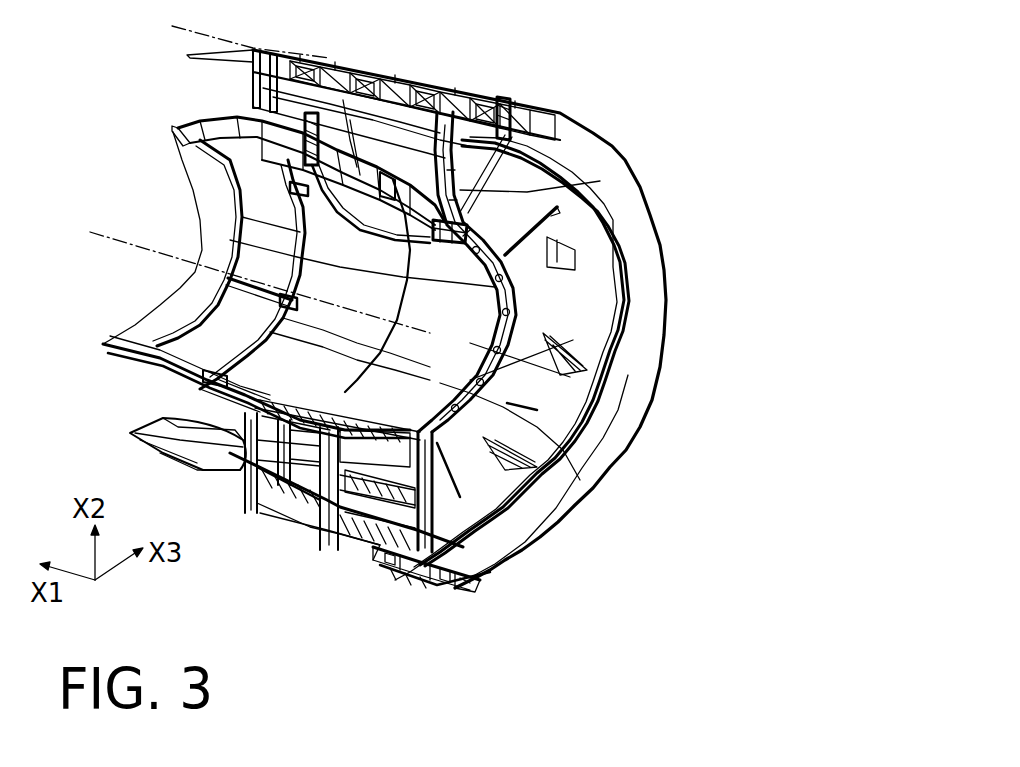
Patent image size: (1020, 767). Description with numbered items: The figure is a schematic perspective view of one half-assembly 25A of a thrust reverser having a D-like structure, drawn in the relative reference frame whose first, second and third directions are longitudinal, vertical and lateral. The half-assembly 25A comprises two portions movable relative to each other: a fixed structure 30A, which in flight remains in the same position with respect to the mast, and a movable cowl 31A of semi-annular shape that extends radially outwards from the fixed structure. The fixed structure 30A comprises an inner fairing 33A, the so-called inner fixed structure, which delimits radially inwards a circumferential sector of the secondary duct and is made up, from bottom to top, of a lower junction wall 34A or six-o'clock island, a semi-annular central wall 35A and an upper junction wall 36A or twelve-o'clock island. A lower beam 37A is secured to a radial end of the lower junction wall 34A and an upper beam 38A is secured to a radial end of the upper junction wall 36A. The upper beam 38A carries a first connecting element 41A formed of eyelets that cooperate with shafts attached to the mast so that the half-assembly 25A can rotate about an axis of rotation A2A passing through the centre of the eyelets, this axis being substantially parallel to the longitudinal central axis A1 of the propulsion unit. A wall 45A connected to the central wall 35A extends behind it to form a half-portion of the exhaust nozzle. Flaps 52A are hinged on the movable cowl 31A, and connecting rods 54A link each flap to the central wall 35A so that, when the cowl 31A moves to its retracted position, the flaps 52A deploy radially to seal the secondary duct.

The half-assembly 25A is at (556, 73).
The movable cowl 31A is at (608, 145).
The first connecting element 41A is at (433, 97).
The wall 45A is at (190, 122).
The connecting rods 54A is at (403, 252).
The flaps 52A is at (280, 300).
The axis of rotation A2A is at (176, 25).
The longitudinal central axis A1 is at (90, 232).
The central wall 35A is at (465, 262).
The lower junction wall 34A is at (425, 506).
The upper junction wall 36A is at (480, 200).
The upper beam 38A is at (460, 165).
The lower beam 37A is at (377, 550).
The inner fairing 33A is at (702, 622).
The fixed structure 30A is at (767, 669).